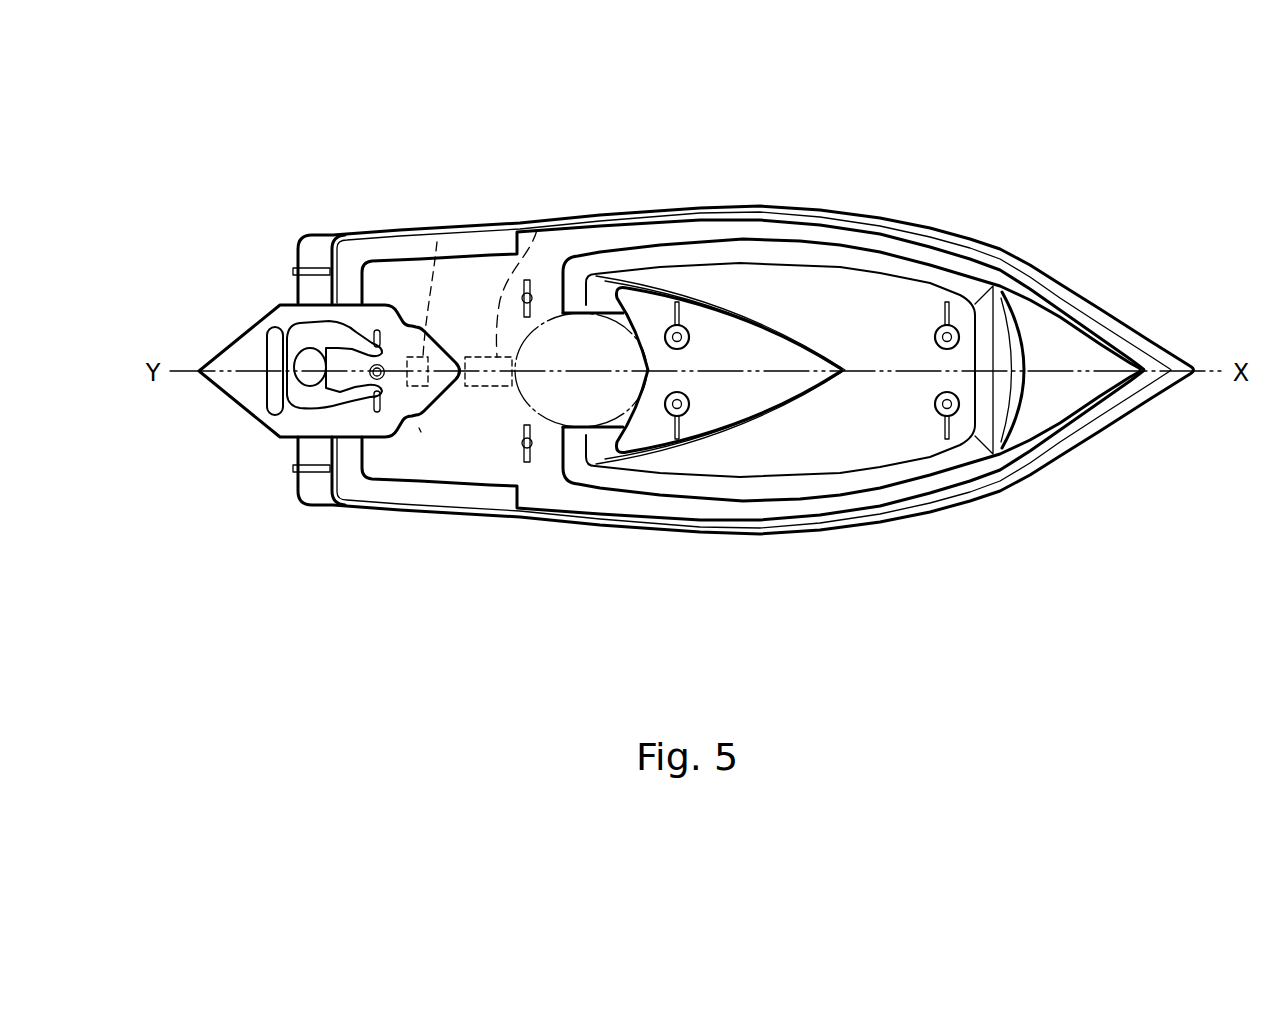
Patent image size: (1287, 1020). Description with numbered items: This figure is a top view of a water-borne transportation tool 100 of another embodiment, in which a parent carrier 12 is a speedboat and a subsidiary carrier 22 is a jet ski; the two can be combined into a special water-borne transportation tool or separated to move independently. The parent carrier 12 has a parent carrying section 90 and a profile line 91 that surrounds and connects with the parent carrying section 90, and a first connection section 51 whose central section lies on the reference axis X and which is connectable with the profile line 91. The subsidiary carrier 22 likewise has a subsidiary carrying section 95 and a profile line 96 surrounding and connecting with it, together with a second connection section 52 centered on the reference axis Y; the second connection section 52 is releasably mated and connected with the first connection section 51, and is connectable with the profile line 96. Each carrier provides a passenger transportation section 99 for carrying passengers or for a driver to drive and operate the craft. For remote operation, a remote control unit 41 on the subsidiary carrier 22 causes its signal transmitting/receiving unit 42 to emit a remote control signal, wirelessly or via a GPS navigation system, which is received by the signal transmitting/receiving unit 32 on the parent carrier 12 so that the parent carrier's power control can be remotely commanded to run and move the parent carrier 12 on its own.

The watercraft 100 is at (706, 182).
The parent carrying section 90 is at (865, 283).
The profile line 91 is at (893, 522).
The parent carrier 12 is at (1069, 290).
The subsidiary carrier 22 is at (242, 352).
The subsidiary carrying section 95 is at (232, 410).
The profile line 96 is at (274, 436).
The remote control unit 41 is at (398, 355).
The signal transmitting/receiving unit 42 is at (436, 241).
The second connection section 52 is at (462, 357).
The signal transmitting/receiving unit 32 is at (538, 228).
The first connection section 51 is at (420, 428).
The passenger transportation section 99 is at (300, 320).